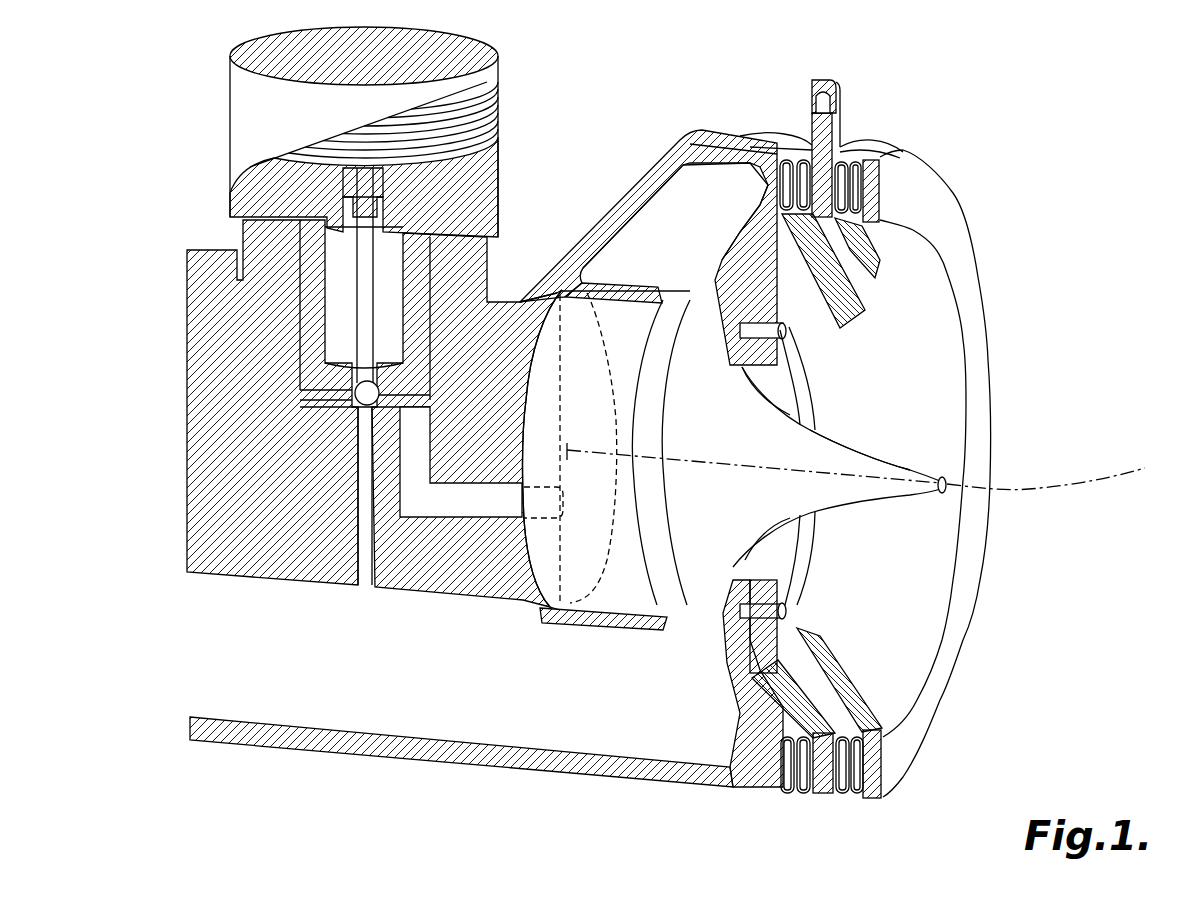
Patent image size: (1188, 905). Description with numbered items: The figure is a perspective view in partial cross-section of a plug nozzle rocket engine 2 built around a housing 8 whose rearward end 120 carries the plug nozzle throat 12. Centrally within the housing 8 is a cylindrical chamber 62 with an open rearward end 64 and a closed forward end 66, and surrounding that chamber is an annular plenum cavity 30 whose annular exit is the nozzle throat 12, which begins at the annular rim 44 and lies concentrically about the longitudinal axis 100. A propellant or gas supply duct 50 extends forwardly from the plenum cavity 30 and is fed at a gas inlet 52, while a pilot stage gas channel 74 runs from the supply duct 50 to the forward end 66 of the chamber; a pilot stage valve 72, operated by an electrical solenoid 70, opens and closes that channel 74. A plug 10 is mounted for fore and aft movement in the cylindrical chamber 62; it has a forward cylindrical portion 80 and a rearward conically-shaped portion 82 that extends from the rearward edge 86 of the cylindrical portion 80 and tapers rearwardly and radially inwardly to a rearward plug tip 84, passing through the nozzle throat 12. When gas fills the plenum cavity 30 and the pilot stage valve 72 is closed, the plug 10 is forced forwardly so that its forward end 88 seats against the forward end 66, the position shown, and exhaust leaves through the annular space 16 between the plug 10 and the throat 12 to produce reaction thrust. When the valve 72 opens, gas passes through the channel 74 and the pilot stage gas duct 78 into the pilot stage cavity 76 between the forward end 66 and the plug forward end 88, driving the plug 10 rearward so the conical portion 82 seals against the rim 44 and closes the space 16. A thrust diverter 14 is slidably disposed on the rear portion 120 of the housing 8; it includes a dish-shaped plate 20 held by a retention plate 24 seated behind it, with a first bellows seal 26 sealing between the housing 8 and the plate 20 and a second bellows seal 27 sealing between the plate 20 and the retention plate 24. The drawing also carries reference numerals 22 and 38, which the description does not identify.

The plug nozzle rocket engine 2 is at (1099, 156).
The housing 8 is at (712, 128).
The plug 10 is at (866, 449).
The plug nozzle throat 12 is at (850, 400).
The thrust diverter 14 is at (845, 142).
The annular space 16 is at (775, 385).
The dish-shaped plate 20 is at (870, 140).
The lower bearing 22 is at (779, 547).
The retention plate 24 is at (980, 560).
The first bellows seal 26 is at (793, 797).
The second bellows seal 27 is at (847, 797).
The annular plenum cavity 30 is at (662, 283).
The pin 38 is at (786, 330).
The annular rim 44 is at (733, 663).
The gas supply duct 50 is at (290, 693).
The gas inlet 52 is at (225, 690).
The cylindrical chamber 62 is at (605, 268).
The open rearward end 64 is at (635, 283).
The closed forward end 66 is at (560, 298).
The electrical solenoid 70 is at (232, 140).
The pilot stage valve 72 is at (385, 392).
The pilot stage gas channel 74 is at (370, 585).
The pilot stage cavity 76 is at (563, 297).
The pilot stage gas duct 78 is at (443, 497).
The forward cylindrical portion 80 is at (600, 613).
The rearward conically-shaped portion 82 is at (903, 463).
The rearward plug tip 84 is at (950, 482).
The rearward edge 86 is at (687, 630).
The forward end 88 is at (520, 573).
The longitudinal axis 100 is at (876, 466).
The rearward end 120 is at (800, 138).